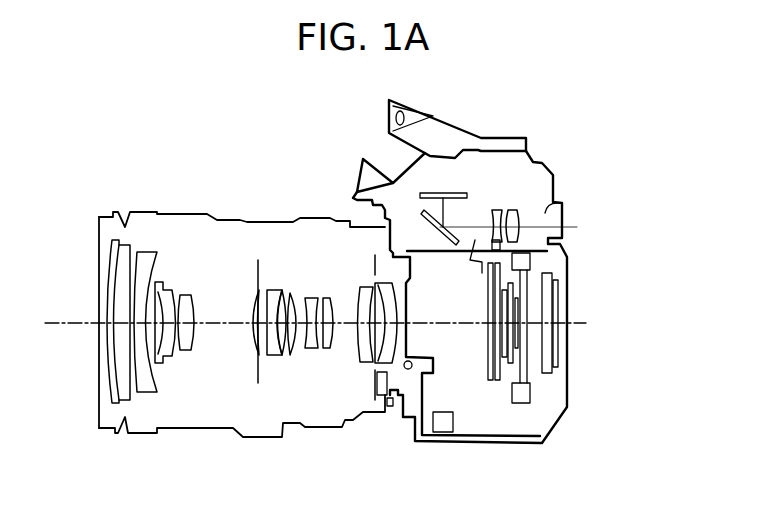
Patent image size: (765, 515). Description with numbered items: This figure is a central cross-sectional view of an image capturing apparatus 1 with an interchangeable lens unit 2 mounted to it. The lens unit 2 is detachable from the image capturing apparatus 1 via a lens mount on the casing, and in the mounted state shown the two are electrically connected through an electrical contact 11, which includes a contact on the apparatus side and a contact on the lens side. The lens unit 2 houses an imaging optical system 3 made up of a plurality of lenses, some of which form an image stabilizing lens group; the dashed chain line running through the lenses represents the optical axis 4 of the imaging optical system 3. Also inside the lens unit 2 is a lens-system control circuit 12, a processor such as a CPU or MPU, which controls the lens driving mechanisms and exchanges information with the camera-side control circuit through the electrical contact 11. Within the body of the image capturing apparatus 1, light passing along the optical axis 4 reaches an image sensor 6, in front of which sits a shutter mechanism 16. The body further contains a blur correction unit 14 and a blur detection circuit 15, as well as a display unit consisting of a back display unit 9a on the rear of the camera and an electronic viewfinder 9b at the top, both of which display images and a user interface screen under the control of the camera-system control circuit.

The image capturing apparatus 1 is at (552, 162).
The lens unit 2 is at (209, 213).
The imaging optical system 3 is at (204, 410).
The optical axis 4 is at (79, 325).
The image sensor 6 is at (520, 342).
The back display unit 9a is at (557, 350).
The electronic viewfinder 9b is at (529, 217).
The electrical contact 11 is at (387, 404).
The lens-system control circuit 12 is at (373, 382).
The blur correction unit 14 is at (520, 403).
The blur detection circuit 15 is at (443, 432).
The shutter mechanism 16 is at (489, 383).